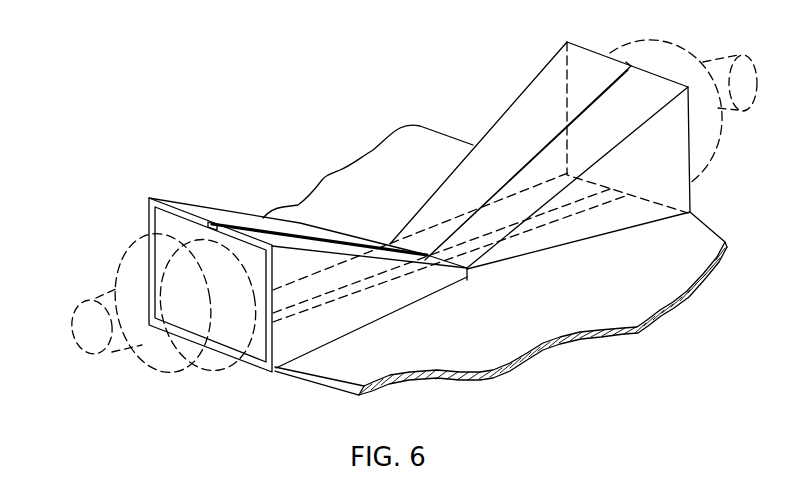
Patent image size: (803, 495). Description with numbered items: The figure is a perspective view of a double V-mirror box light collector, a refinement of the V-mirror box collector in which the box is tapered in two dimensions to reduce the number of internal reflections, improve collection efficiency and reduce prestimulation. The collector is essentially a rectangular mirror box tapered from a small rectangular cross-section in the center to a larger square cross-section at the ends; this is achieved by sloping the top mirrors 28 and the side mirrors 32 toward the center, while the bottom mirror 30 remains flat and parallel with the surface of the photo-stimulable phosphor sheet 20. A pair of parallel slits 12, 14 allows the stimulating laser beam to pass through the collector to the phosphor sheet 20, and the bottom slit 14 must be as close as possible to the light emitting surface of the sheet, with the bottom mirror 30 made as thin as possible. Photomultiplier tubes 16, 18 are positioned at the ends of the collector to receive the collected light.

The slit 12 is at (556, 137).
The bottom slit 14 is at (217, 342).
The photomultiplier tube 16 is at (638, 47).
The photomultiplier tube 18 is at (103, 288).
The photo-stimulable phosphor sheet 20 is at (631, 324).
The top mirrors 28 is at (410, 223).
The bottom mirror 30 is at (162, 247).
The side mirrors 32 is at (506, 253).